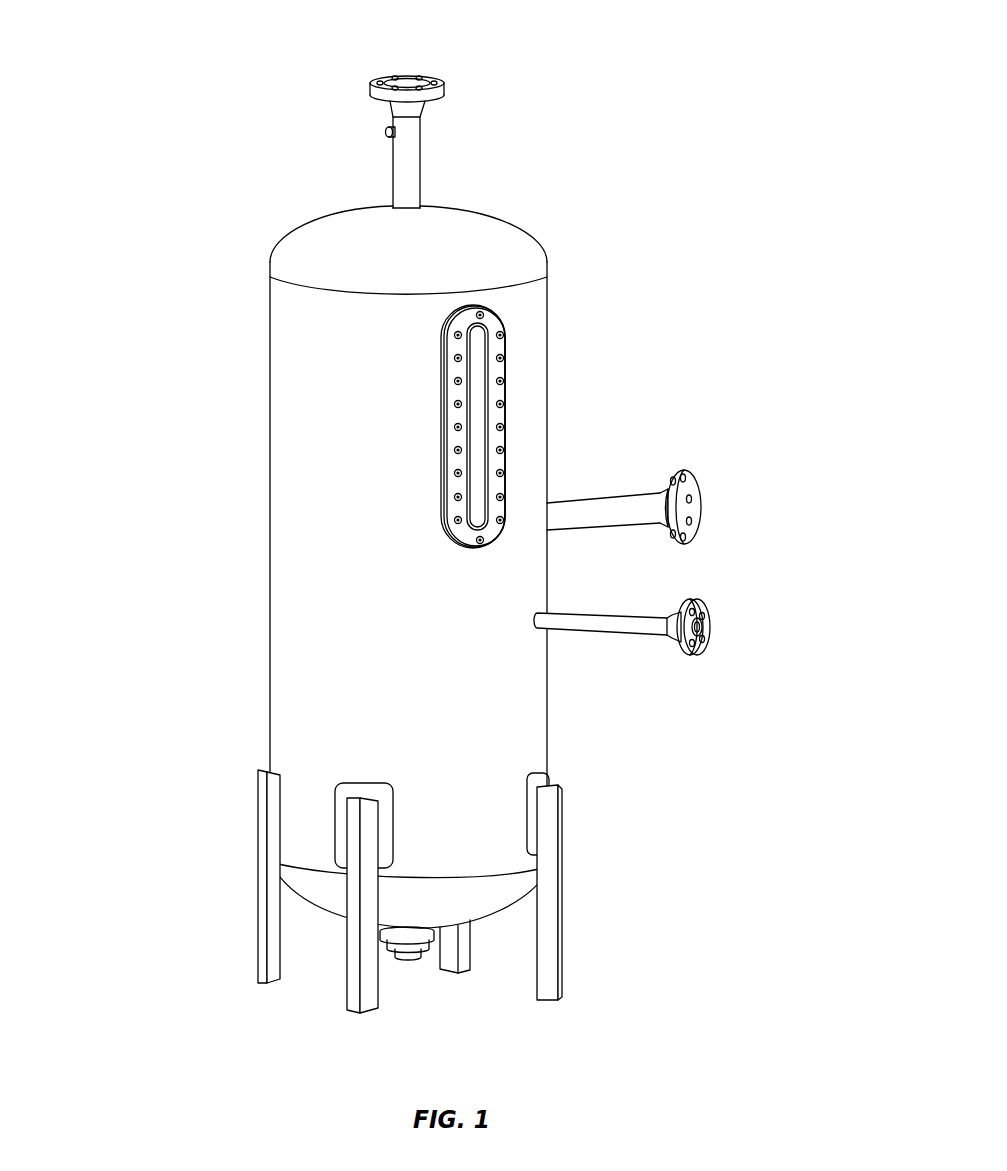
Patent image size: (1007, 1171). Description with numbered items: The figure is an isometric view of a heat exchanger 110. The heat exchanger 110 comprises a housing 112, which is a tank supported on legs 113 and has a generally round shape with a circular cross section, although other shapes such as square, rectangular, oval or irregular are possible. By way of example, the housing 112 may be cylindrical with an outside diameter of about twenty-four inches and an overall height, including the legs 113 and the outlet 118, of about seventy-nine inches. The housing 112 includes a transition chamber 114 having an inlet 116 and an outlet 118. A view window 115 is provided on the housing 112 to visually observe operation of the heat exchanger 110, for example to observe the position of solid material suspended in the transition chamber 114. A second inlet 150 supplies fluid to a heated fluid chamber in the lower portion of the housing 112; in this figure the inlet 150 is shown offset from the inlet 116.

The heat exchanger 110 is at (257, 58).
The housing 112 is at (530, 308).
The legs 113 is at (357, 1000).
The transition chamber 114 is at (332, 463).
The view window 115 is at (480, 412).
The inlet 116 is at (623, 508).
The outlet 118 is at (408, 162).
The inlet 150 is at (620, 625).